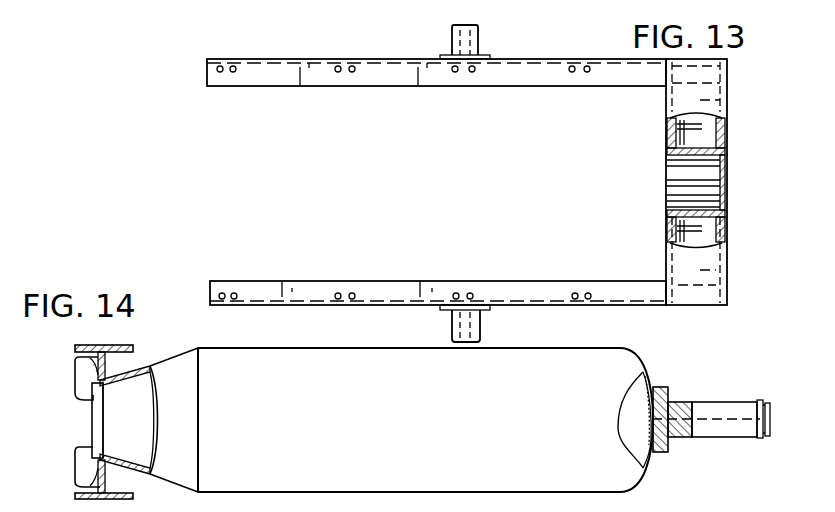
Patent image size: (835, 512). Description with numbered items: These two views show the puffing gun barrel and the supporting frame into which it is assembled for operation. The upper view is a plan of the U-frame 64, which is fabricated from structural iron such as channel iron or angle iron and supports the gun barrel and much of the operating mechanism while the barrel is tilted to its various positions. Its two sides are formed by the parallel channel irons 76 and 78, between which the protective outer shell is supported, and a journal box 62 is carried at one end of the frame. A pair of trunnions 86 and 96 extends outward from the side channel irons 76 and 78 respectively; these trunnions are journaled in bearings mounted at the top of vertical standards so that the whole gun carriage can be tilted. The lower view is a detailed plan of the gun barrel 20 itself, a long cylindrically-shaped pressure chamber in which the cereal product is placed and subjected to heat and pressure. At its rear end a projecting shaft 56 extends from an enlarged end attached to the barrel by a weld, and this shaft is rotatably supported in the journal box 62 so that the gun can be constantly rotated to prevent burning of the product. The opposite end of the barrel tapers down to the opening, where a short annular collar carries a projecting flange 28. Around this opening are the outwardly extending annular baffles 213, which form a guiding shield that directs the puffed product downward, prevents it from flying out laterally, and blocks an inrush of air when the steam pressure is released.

In FIG. 14, the gun barrel 20 is at (296, 348).
In FIG. 14, the flange 28 is at (108, 364).
In FIG. 14, the shaft 56 is at (683, 402).
In FIG. 13, the journal box 62 is at (670, 212).
In FIG. 13, the U-frame 64 is at (484, 276).
In FIG. 13, the channel iron 76 is at (334, 58).
In FIG. 13, the channel iron 78 is at (262, 280).
In FIG. 13, the trunnion 86 is at (478, 42).
In FIG. 13, the trunnion 96 is at (482, 332).
In FIG. 14, the baffles 213 is at (80, 378).